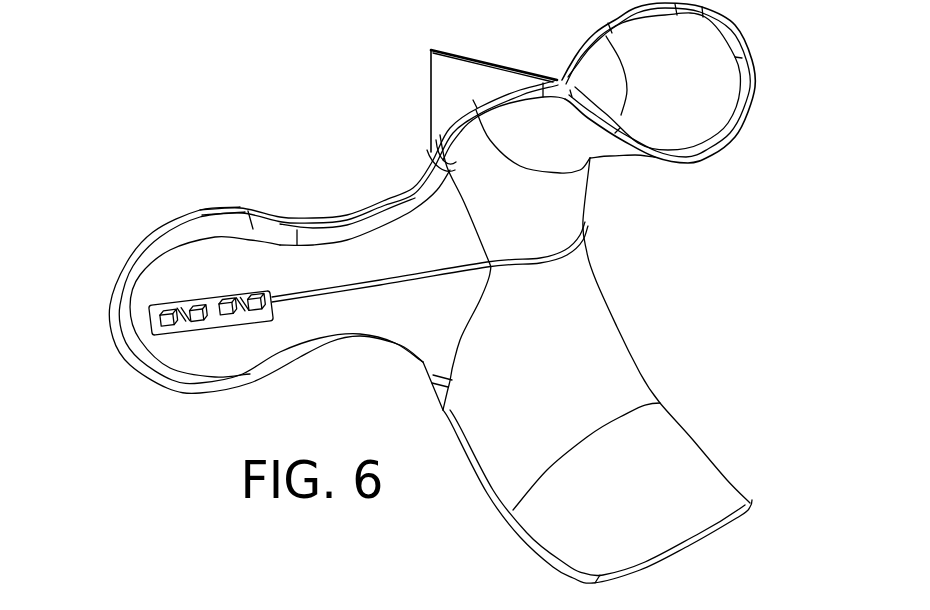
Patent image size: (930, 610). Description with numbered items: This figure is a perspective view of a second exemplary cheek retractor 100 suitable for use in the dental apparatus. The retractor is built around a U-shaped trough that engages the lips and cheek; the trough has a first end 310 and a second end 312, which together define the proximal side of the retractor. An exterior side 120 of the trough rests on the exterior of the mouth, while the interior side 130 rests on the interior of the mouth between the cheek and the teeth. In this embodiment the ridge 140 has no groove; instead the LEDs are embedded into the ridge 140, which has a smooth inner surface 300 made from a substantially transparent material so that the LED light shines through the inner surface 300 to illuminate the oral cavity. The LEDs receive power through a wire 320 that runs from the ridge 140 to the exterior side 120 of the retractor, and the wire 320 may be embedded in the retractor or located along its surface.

The cheek retractor 100 is at (392, 77).
The exterior side 120 is at (701, 95).
The interior side 130 is at (480, 136).
The ridge 140 is at (297, 325).
The inner surface 300 is at (170, 305).
The first end 310 is at (738, 140).
The second end 312 is at (710, 542).
The wire 320 is at (545, 263).